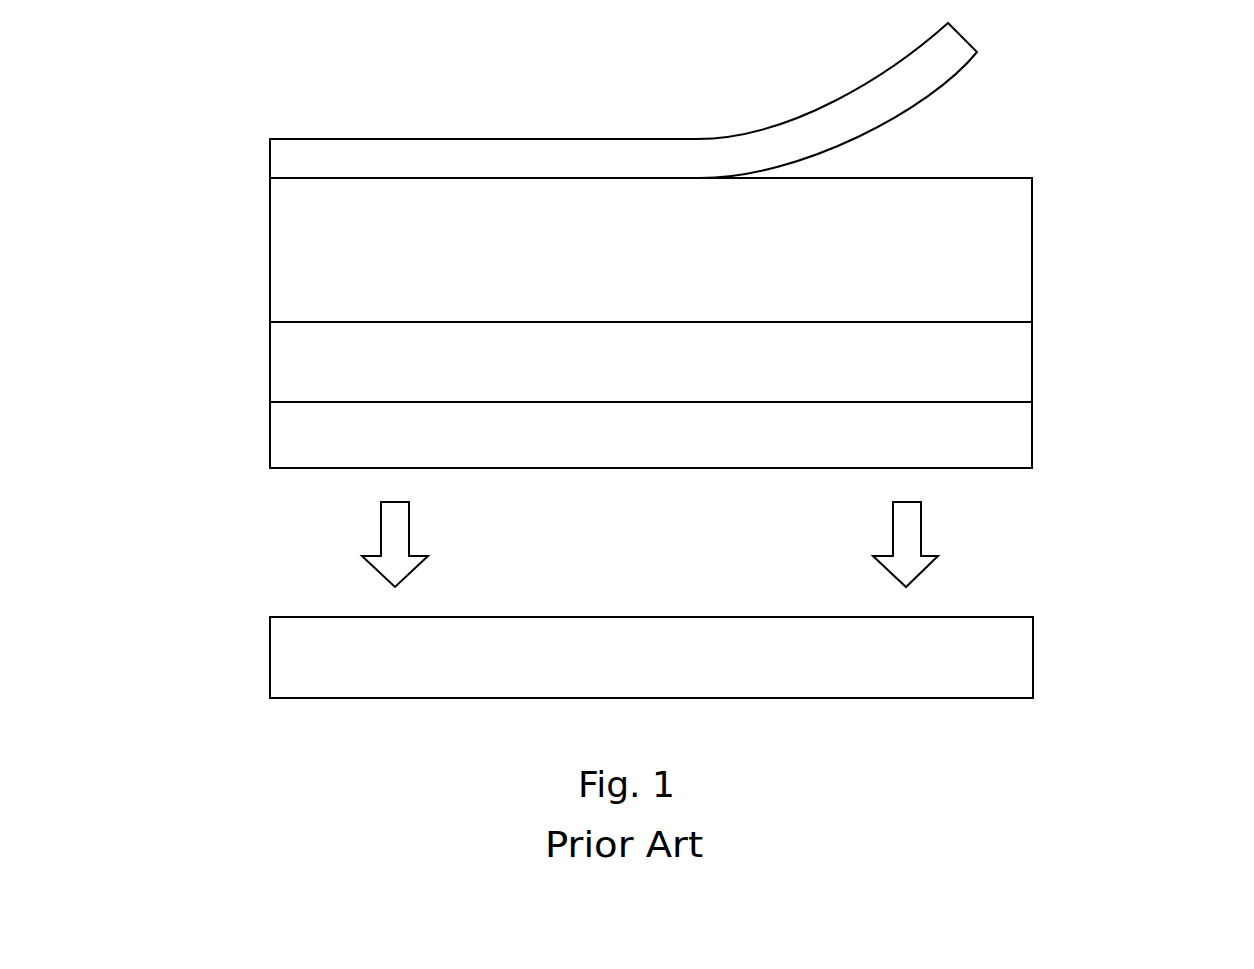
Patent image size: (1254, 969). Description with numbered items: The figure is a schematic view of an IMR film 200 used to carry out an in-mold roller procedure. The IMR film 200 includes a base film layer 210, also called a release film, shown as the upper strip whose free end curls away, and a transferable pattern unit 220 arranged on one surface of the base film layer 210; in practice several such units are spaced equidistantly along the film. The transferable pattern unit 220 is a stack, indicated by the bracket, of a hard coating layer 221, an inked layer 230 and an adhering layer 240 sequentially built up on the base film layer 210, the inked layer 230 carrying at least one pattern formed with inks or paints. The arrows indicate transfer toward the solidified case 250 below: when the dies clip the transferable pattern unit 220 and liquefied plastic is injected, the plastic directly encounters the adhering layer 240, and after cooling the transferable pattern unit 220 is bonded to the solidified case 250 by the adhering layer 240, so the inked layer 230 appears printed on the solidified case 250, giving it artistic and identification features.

The IMR film 200 is at (196, 136).
The base film layer 210 is at (343, 158).
The transferable pattern unit 220 is at (1143, 233).
The hard coating layer 221 is at (1008, 250).
The inked layer 230 is at (1008, 363).
The adhering layer 240 is at (1008, 437).
The solidified case 250 is at (1008, 660).